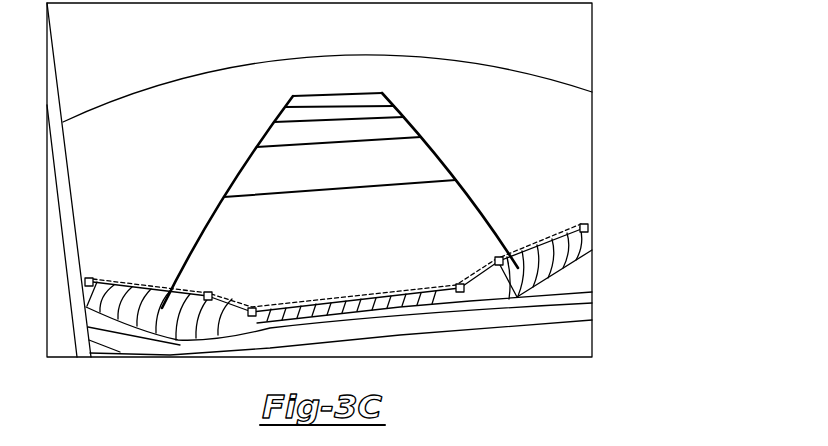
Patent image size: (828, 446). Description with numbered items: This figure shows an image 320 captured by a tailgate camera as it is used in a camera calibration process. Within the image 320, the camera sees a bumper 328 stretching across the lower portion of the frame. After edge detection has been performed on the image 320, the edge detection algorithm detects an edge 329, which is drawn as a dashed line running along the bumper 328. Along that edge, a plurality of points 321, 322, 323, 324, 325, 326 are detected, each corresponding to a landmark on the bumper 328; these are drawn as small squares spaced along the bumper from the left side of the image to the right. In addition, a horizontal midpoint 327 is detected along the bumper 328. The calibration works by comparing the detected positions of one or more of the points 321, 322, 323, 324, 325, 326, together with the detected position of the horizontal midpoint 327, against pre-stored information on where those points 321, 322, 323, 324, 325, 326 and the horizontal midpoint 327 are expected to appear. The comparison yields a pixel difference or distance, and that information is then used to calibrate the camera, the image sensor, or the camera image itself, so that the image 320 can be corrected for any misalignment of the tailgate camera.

The image 320 is at (624, 38).
The point 321 is at (89, 277).
The point 322 is at (223, 241).
The point 323 is at (252, 307).
The point 324 is at (456, 284).
The point 325 is at (496, 258).
The point 326 is at (584, 223).
The horizontal midpoint 327 is at (367, 300).
The bumper 328 is at (318, 310).
The edge 329 is at (136, 287).